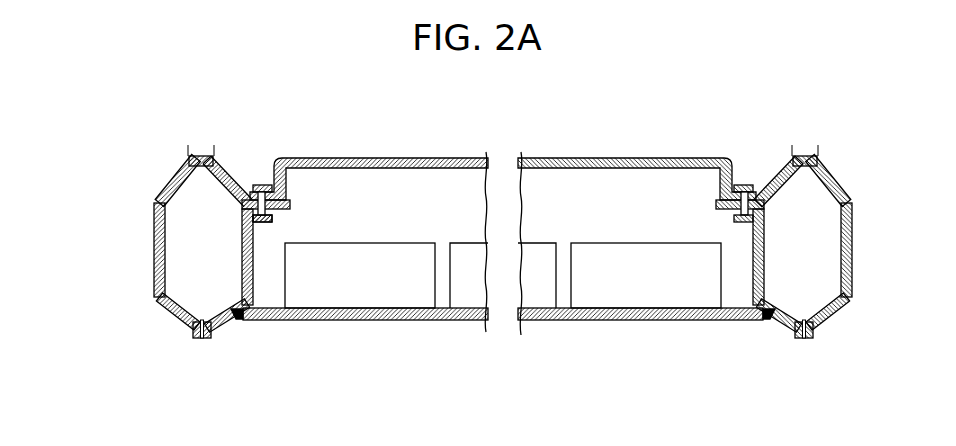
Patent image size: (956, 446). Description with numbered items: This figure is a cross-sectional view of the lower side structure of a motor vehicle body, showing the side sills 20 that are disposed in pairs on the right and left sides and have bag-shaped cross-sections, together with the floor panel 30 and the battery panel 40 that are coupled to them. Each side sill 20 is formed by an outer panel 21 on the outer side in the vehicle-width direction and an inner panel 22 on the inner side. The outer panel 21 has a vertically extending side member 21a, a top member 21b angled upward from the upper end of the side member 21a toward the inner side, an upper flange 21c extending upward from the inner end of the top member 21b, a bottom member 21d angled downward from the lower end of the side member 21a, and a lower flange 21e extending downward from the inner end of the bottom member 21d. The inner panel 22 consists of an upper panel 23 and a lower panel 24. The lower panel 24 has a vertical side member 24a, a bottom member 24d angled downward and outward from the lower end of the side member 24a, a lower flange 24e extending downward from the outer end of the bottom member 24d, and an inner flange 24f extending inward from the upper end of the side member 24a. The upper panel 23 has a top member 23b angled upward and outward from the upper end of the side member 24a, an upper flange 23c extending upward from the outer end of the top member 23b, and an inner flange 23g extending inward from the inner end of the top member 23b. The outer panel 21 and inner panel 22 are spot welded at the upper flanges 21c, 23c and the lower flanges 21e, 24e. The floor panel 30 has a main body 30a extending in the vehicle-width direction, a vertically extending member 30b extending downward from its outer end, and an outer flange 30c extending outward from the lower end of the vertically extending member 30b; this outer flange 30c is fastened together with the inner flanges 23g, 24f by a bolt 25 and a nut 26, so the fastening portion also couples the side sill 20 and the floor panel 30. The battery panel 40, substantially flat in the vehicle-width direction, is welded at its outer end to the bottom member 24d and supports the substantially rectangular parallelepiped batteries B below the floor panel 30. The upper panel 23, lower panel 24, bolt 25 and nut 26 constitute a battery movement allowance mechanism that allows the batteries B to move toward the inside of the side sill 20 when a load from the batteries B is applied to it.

The side sill 20 is at (475, 245).
The outer panel 21 is at (155, 260).
The side member 21a is at (152, 232).
The top member 21b is at (160, 203).
The upper flange 21c is at (194, 157).
The bottom member 21d is at (180, 316).
The lower flange 21e is at (196, 338).
The inner panel 22 is at (215, 235).
The upper panel 23 is at (228, 169).
The top member 23b is at (238, 192).
The upper flange 23c is at (217, 170).
The inner flange 23g is at (305, 192).
The lower panel 24 is at (238, 301).
The side member 24a is at (247, 257).
The bottom member 24d is at (237, 314).
The lower flange 24e is at (226, 315).
The inner flange 24f is at (252, 240).
The bolt 25 is at (262, 184).
The nut 26 is at (296, 262).
The floor panel 30 is at (503, 136).
The main body 30a is at (356, 158).
The vertically extending member 30b is at (300, 160).
The outer flange 30c is at (256, 190).
The battery panel 40 is at (424, 322).
The battery B is at (450, 243).